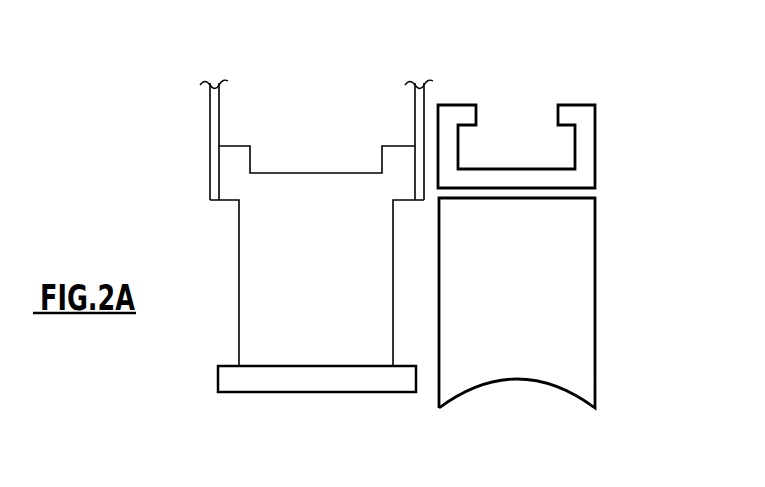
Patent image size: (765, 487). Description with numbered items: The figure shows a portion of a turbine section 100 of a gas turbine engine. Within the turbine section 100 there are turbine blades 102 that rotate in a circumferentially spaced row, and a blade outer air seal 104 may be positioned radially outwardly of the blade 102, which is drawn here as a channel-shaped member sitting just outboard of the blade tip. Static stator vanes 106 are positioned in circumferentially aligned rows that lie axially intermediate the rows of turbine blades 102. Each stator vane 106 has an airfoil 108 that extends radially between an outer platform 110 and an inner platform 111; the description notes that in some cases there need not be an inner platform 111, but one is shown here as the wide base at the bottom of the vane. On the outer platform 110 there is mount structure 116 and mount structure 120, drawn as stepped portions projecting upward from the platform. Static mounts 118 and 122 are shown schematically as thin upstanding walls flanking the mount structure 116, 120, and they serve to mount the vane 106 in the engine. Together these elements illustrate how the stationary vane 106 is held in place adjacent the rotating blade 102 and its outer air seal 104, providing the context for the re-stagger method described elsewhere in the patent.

The turbine section 100 is at (292, 63).
The turbine blade 102 is at (588, 283).
The blade outer air seal 104 is at (588, 175).
The static stator vane 106 is at (268, 314).
The airfoil 108 is at (268, 255).
The outer platform 110 is at (235, 187).
The inner platform 111 is at (245, 378).
The mount structure 116 is at (398, 158).
The static mount 118 is at (426, 97).
The mount structure 120 is at (236, 158).
The static mount 122 is at (212, 108).